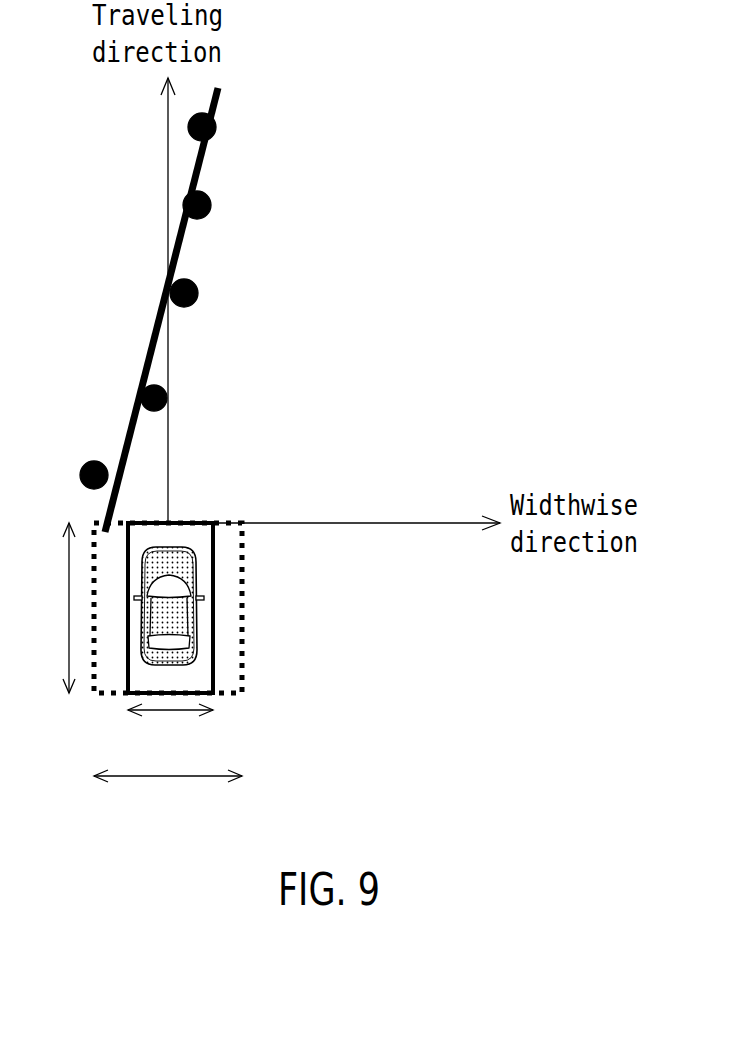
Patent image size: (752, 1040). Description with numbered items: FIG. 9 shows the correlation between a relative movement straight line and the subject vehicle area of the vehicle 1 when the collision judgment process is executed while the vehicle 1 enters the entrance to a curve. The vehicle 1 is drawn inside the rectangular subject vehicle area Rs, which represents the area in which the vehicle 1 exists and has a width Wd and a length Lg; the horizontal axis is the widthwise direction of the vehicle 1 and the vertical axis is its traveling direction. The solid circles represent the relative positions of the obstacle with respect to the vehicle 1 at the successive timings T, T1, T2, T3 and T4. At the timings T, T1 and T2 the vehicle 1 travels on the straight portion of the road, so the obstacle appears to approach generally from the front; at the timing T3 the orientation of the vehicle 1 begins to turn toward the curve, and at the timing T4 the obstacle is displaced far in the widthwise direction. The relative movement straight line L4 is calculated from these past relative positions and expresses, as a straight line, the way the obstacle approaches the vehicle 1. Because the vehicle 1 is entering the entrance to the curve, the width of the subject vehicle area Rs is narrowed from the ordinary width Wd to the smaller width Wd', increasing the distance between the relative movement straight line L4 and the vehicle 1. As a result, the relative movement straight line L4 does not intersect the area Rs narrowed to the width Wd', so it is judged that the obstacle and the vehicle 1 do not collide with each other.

The vehicle 1 is at (198, 622).
The timing T is at (216, 123).
The timing T1 is at (211, 200).
The timing T2 is at (198, 298).
The timing T3 is at (167, 398).
The timing T4 is at (82, 463).
The relative movement straight line L4 is at (178, 252).
The subject vehicle area Rs is at (242, 672).
The length Lg is at (51, 608).
The width Wd is at (168, 791).
The width Wd' is at (170, 727).